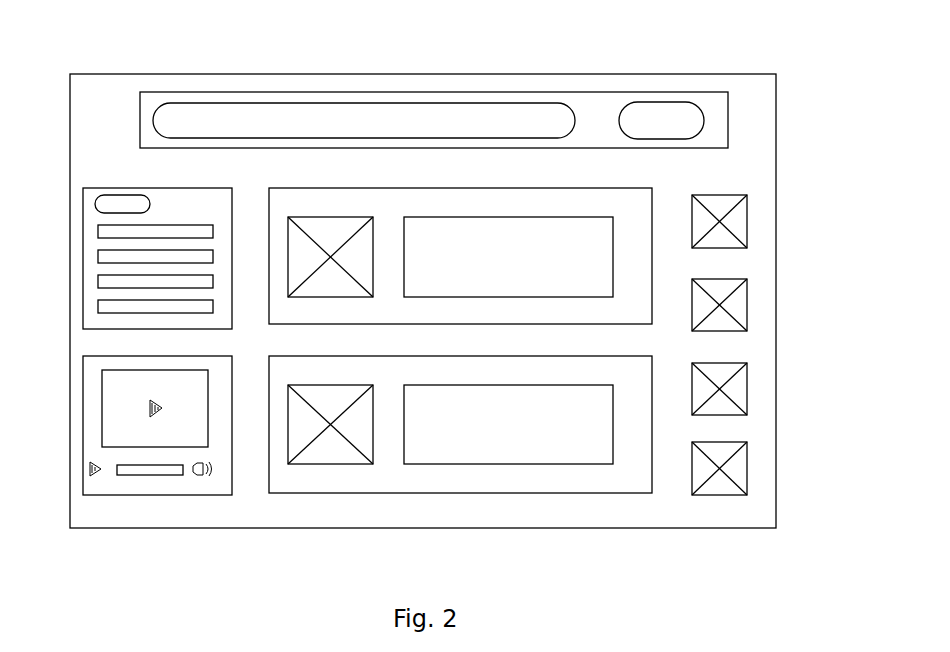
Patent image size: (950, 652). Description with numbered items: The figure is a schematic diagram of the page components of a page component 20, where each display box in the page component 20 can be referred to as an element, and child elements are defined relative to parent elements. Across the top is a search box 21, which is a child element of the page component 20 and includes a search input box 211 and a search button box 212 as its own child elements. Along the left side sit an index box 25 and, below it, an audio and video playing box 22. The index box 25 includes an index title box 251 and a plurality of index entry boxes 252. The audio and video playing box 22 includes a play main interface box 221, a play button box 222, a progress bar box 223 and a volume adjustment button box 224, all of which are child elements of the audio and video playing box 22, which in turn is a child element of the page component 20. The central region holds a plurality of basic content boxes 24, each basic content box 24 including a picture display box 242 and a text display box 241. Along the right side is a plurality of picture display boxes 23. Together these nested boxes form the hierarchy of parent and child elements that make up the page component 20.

The page component 20 is at (477, 74).
The search box 21 is at (562, 92).
The search input box 211 is at (345, 102).
The search button box 212 is at (655, 102).
The audio and video playing box 22 is at (83, 370).
The play main interface box 221 is at (102, 405).
The play button box 222 is at (85, 475).
The progress bar box 223 is at (163, 475).
The volume adjustment button box 224 is at (203, 477).
The picture display boxes 23 is at (747, 223).
The basic content box 24 is at (490, 188).
The text display box 241 is at (550, 217).
The picture display box 242 is at (337, 216).
The index box 25 is at (83, 212).
The index title box 251 is at (125, 195).
The index entry boxes 252 is at (98, 231).